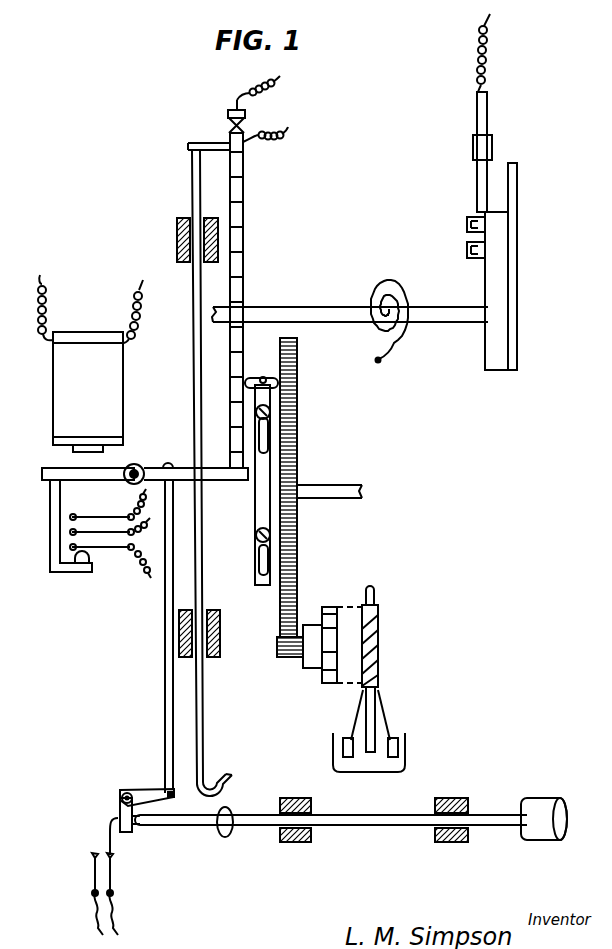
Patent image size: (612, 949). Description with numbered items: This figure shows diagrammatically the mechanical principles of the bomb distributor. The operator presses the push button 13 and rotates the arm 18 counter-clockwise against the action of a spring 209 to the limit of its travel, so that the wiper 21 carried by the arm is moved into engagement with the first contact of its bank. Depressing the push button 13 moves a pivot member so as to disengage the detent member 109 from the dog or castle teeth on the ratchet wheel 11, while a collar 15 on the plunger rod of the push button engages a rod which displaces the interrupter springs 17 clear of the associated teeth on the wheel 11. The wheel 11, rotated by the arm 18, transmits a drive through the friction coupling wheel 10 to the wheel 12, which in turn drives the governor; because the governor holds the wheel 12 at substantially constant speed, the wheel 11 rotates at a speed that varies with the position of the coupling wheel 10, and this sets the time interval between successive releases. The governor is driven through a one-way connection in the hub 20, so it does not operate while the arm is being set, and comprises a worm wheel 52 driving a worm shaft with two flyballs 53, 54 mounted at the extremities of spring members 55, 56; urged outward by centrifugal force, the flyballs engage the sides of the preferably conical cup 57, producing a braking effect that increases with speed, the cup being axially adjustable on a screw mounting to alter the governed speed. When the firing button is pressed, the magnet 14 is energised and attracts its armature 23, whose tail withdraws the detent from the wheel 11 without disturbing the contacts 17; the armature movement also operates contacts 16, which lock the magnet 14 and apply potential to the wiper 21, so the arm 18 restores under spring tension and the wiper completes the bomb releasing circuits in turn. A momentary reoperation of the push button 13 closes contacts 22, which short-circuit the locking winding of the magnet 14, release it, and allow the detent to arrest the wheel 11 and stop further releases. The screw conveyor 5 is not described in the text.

The screw conveyor 5 is at (381, 629).
The friction coupling wheel 10 is at (254, 383).
The toothed wheel 11 is at (238, 250).
The wheel 12 is at (296, 367).
The push button 13 is at (550, 796).
The magnet 14 is at (55, 387).
The collar 15 is at (230, 838).
The contacts 16 is at (118, 537).
The interrupter springs 17 is at (235, 119).
The arm 18 is at (488, 348).
The hub 20 is at (313, 625).
The wiper 21 is at (488, 150).
The contacts 22 is at (99, 850).
The armature 23 is at (46, 468).
The worm wheel 52 is at (331, 608).
The flyball 53 is at (343, 752).
The flyball 54 is at (401, 751).
The spring member 55 is at (357, 697).
The spring member 56 is at (384, 712).
The cup 57 is at (365, 774).
The detent member 109 is at (224, 472).
The spring 209 is at (401, 350).